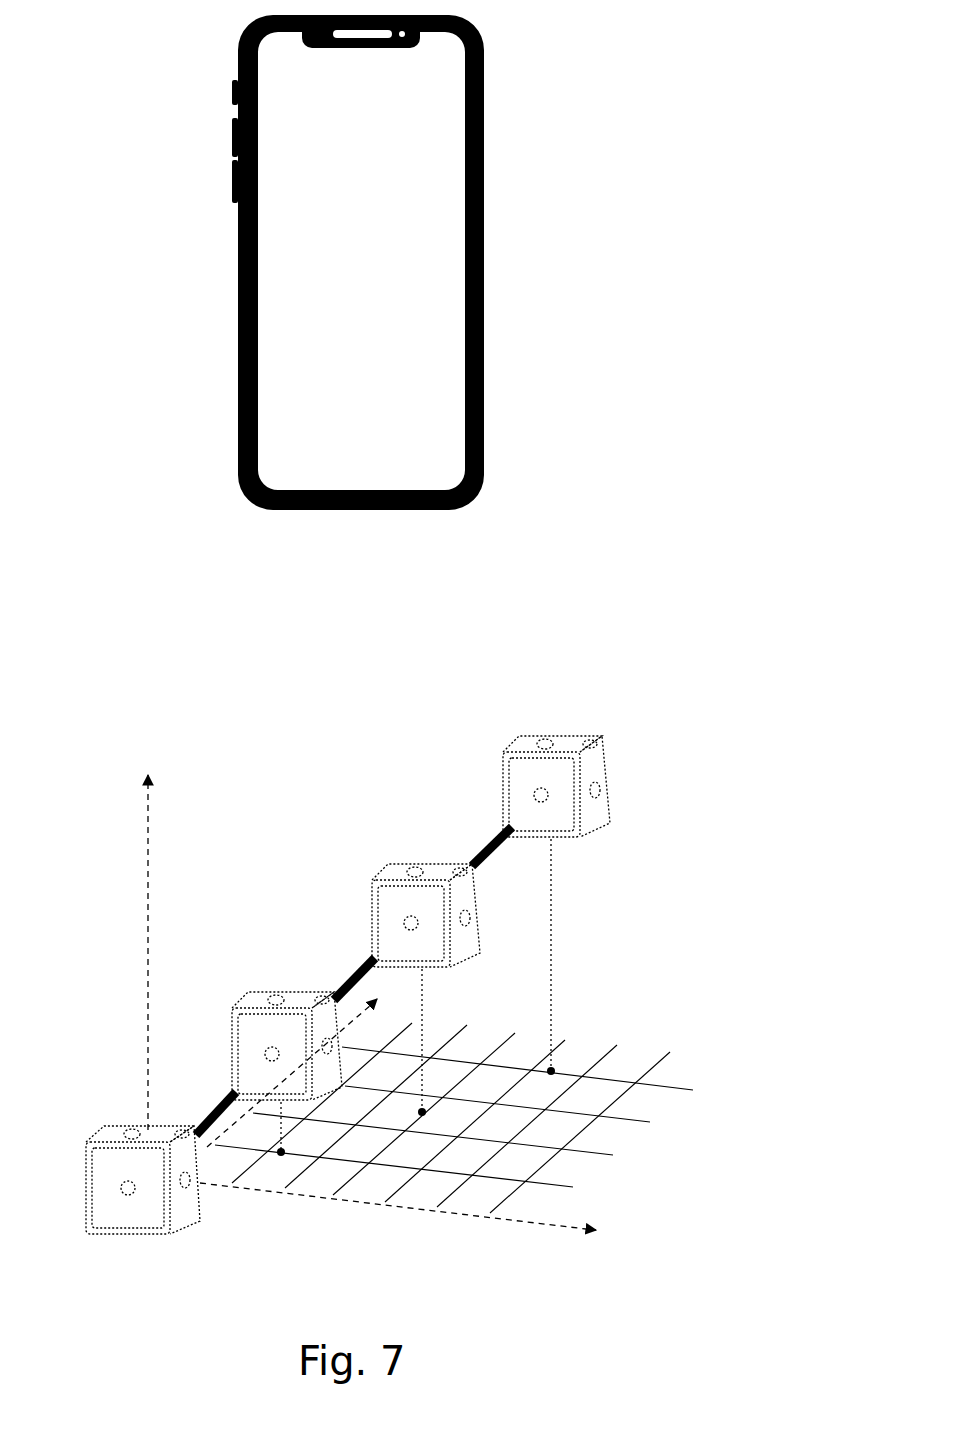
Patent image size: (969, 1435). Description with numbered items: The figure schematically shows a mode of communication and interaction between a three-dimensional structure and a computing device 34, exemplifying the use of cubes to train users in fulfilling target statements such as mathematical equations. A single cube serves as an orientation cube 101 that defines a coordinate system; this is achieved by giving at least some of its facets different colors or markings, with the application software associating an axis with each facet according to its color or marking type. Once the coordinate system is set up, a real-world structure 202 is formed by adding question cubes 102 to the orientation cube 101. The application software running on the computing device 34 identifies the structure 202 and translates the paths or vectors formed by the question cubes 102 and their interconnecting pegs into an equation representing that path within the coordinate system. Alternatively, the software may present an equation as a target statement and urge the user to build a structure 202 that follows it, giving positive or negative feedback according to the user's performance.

The computing device 34 is at (505, 153).
The real world structure 202 is at (280, 713).
The orientation cube 101 is at (118, 1128).
The question cubes 102 is at (267, 988).